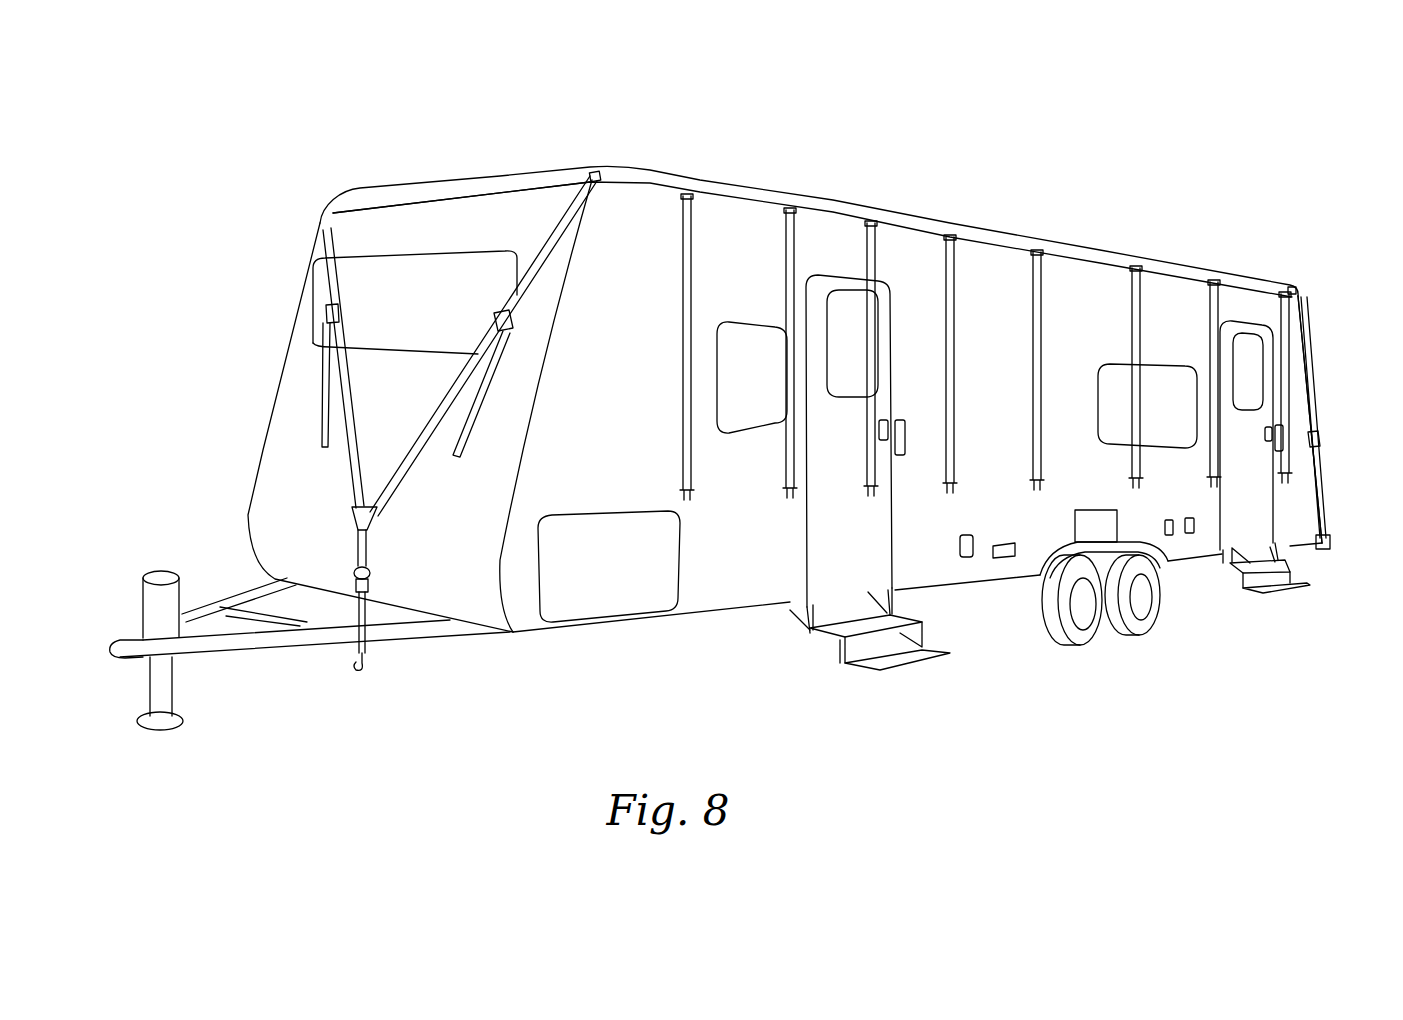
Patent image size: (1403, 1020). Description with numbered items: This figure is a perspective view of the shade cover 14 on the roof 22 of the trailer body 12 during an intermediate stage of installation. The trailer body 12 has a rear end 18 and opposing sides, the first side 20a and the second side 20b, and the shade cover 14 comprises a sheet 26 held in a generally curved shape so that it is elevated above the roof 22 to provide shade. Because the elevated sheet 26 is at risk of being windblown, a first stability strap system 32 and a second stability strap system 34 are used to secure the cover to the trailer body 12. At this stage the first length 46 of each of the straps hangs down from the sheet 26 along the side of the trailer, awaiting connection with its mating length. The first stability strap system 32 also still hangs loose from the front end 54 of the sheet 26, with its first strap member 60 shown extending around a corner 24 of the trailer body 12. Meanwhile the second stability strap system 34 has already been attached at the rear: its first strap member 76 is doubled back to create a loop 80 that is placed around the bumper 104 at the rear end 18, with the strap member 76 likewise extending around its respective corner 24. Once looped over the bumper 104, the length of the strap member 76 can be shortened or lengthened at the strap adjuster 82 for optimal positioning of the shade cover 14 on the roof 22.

The trailer body 12 is at (488, 610).
The shade cover 14 is at (747, 407).
The rear end 18 is at (1324, 298).
The first side 20a is at (566, 433).
The second side 20b is at (275, 338).
The roof 22 is at (977, 230).
The corner 24 is at (829, 391).
The sheet 26 is at (820, 198).
The first stability strap system 32 is at (419, 482).
The second stability strap system 34 is at (1342, 448).
The first length 46 is at (683, 323).
The front end 54 is at (421, 165).
The first strap member 60 is at (574, 215).
The first strap member 76 is at (1308, 384).
The loop 80 is at (1349, 526).
The strap adjuster 82 is at (1314, 437).
The bumper 104 is at (1331, 541).